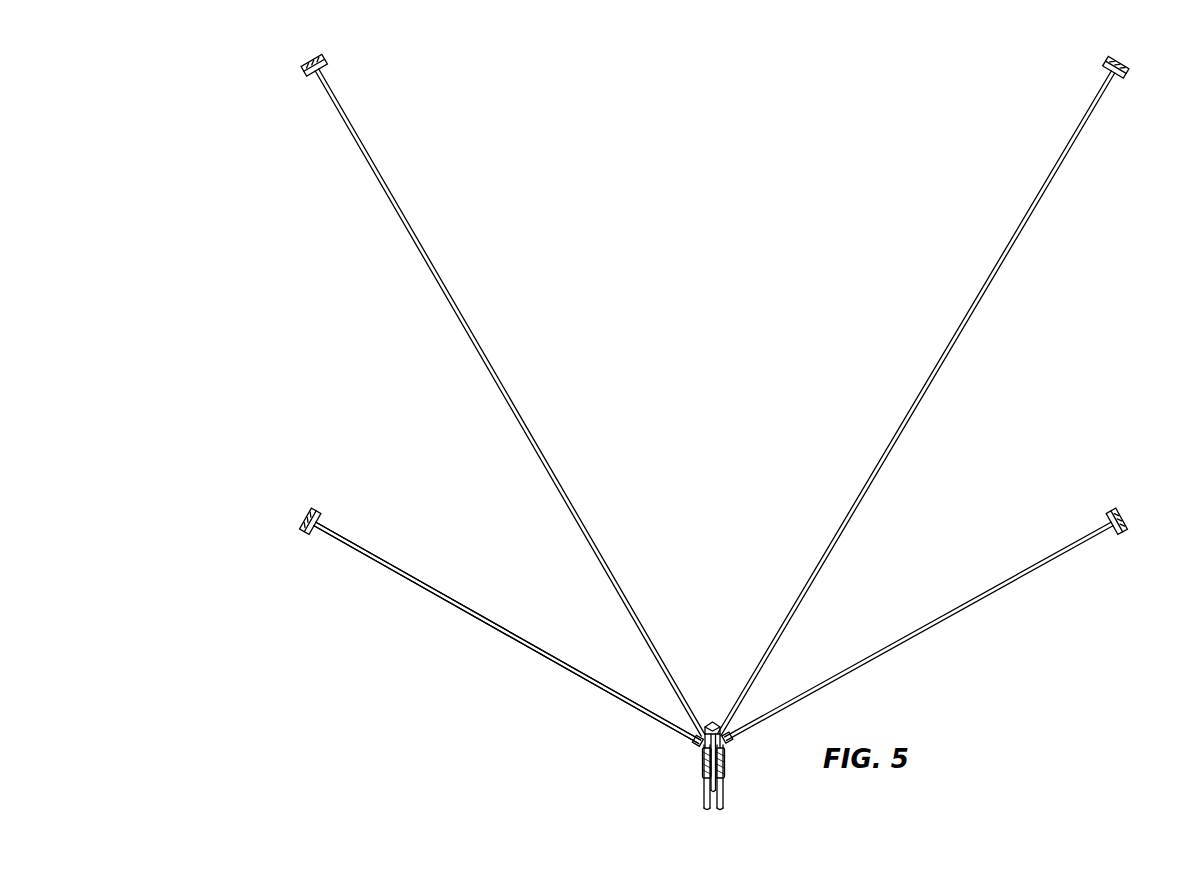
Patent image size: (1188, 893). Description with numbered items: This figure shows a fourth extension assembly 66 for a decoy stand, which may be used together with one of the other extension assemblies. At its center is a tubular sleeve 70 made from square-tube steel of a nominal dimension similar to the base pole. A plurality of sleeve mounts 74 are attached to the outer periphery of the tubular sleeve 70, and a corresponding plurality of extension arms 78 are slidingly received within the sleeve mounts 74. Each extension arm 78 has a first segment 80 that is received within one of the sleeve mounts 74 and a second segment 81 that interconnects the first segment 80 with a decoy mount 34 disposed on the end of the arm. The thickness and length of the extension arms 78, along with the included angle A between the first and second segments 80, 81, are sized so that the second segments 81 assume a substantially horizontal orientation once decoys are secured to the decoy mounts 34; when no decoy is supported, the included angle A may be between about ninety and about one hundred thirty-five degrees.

The decoy mount 34 is at (304, 65).
The fourth extension assembly 66 is at (263, 273).
The tubular sleeve 70 is at (708, 721).
The sleeve mount 74 is at (707, 762).
The extension arm 78 is at (384, 184).
The first segment 80 is at (703, 808).
The second segment 81 is at (563, 667).
The included angle A is at (666, 729).